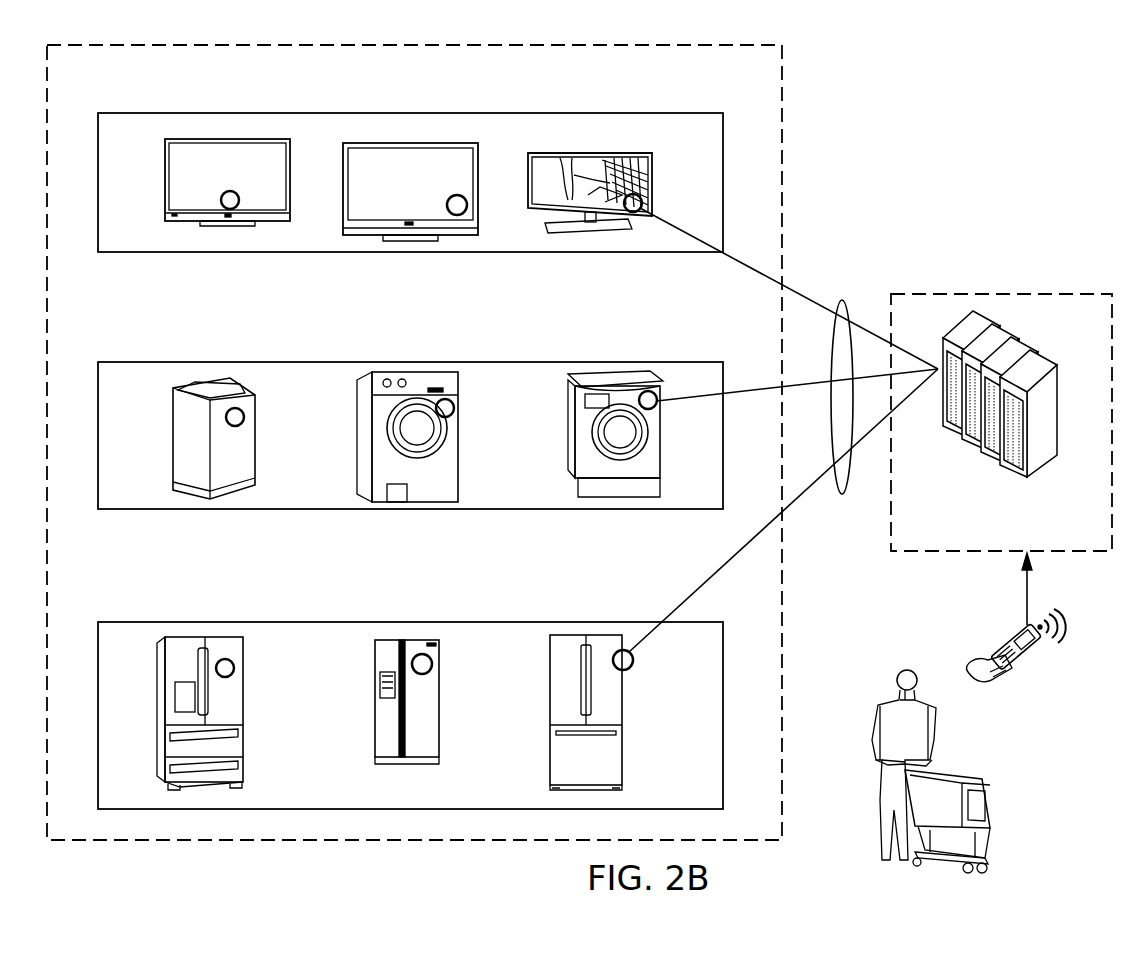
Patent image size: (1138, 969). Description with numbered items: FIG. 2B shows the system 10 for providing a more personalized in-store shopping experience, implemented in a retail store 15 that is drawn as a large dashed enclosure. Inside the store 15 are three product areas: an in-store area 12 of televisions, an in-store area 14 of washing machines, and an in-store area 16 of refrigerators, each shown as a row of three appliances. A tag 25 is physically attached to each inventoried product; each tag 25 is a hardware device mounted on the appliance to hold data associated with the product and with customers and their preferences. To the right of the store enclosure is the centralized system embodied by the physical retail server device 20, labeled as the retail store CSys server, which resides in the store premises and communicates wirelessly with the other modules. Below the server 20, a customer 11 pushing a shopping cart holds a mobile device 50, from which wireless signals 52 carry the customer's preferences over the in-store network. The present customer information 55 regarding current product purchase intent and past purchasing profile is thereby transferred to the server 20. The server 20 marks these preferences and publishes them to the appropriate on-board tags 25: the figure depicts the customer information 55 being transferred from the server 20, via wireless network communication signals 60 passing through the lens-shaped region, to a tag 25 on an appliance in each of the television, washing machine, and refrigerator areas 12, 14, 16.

The system 10 is at (960, 90).
The customer 11 is at (895, 700).
The in-store area of televisions 12 is at (480, 113).
The in-store area of washing machines 14 is at (522, 362).
The store 15 is at (782, 72).
The in-store area of refrigerators 16 is at (438, 622).
The retail server device 20 is at (1052, 294).
The tag 25 is at (643, 200).
The mobile device 50 is at (990, 652).
The wireless signals 52 is at (1063, 630).
The customer information 55 is at (1027, 592).
The wireless network communication signals 60 is at (843, 300).